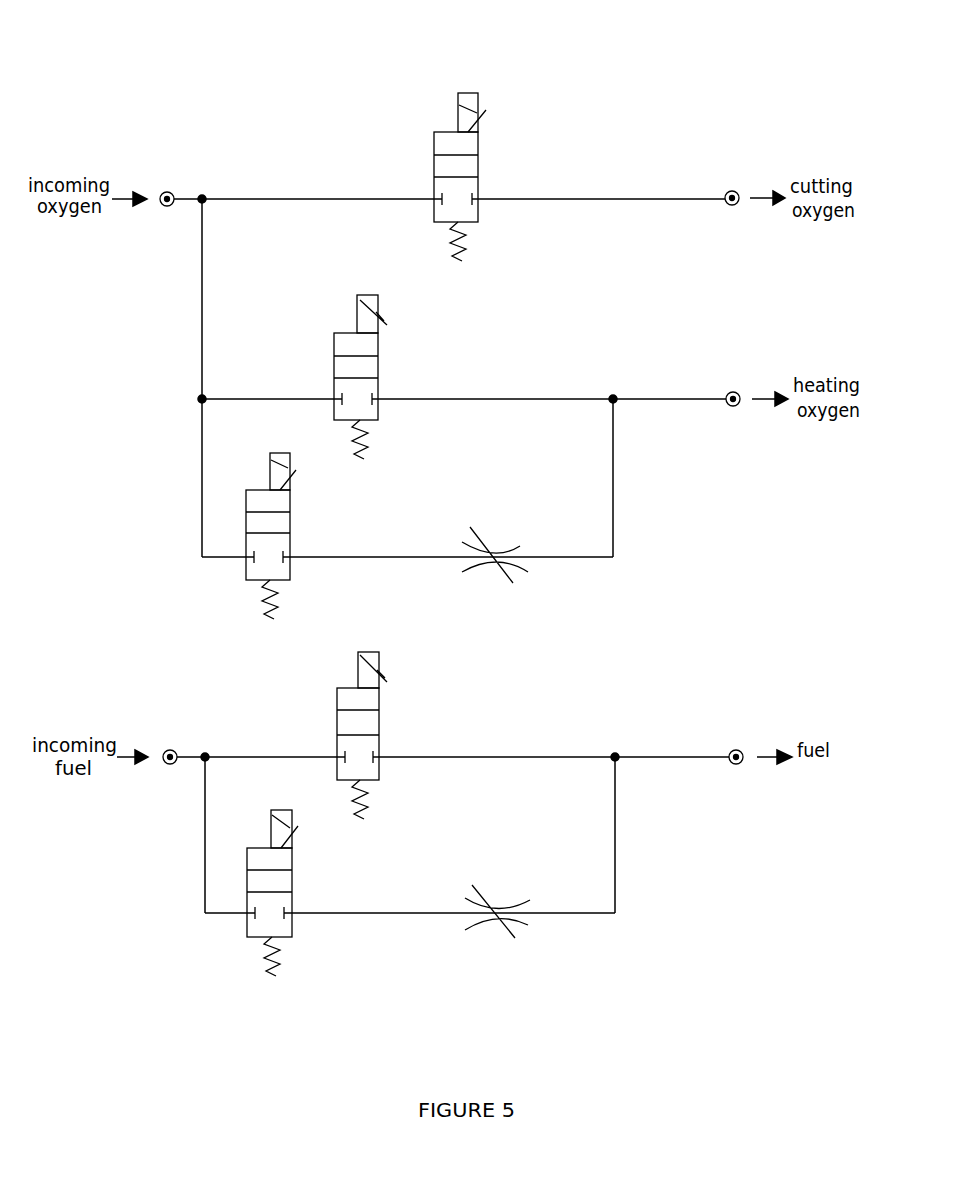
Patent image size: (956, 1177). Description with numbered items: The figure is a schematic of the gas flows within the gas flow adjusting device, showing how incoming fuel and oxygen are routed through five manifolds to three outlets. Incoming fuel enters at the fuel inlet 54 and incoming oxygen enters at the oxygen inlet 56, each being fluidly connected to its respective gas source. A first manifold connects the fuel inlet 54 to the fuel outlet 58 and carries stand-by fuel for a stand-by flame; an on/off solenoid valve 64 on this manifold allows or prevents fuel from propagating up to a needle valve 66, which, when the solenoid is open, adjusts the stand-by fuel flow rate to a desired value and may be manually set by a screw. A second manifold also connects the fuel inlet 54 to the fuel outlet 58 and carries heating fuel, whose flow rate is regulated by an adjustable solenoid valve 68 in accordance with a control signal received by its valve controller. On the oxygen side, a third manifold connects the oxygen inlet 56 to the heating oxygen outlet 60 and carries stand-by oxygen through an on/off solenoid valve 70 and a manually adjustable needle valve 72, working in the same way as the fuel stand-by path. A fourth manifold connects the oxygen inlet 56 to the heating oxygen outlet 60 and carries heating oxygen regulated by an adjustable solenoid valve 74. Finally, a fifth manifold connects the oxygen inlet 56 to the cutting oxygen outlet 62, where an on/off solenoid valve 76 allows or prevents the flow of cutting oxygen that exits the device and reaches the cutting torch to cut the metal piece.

The fuel inlet 54 is at (167, 752).
The oxygen inlet 56 is at (163, 195).
The fuel outlet 58 is at (740, 748).
The heating oxygen outlet 60 is at (738, 392).
The cutting oxygen outlet 62 is at (737, 190).
The on/off solenoid valve 64 is at (272, 880).
The needle valve 66 is at (517, 922).
The adjustable solenoid valve 68 is at (375, 712).
The on/off solenoid valve 70 is at (270, 522).
The needle valve 72 is at (517, 552).
The adjustable solenoid valve 74 is at (372, 357).
The on/off solenoid valve 76 is at (452, 150).